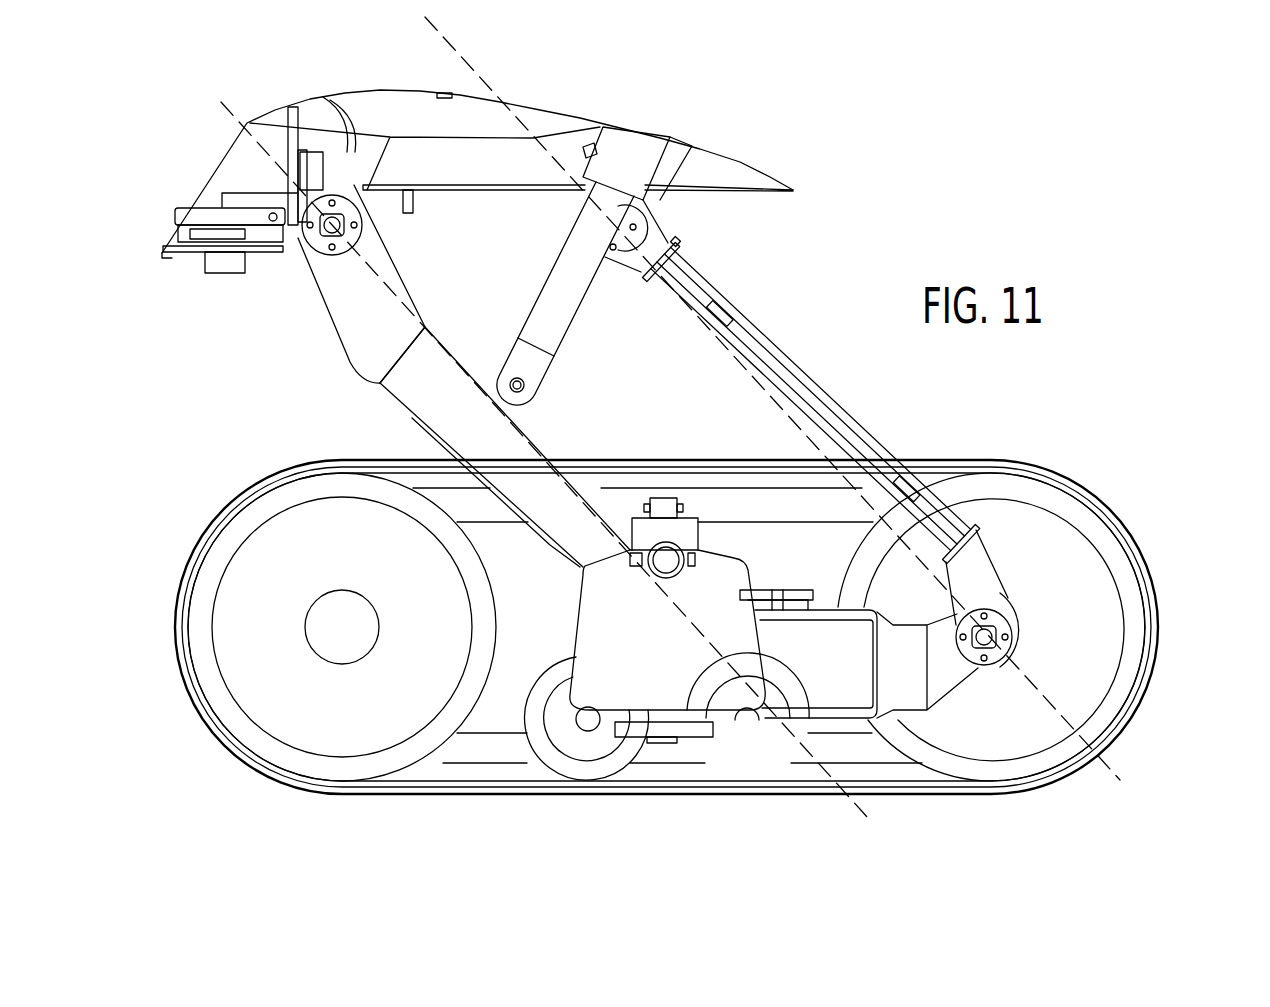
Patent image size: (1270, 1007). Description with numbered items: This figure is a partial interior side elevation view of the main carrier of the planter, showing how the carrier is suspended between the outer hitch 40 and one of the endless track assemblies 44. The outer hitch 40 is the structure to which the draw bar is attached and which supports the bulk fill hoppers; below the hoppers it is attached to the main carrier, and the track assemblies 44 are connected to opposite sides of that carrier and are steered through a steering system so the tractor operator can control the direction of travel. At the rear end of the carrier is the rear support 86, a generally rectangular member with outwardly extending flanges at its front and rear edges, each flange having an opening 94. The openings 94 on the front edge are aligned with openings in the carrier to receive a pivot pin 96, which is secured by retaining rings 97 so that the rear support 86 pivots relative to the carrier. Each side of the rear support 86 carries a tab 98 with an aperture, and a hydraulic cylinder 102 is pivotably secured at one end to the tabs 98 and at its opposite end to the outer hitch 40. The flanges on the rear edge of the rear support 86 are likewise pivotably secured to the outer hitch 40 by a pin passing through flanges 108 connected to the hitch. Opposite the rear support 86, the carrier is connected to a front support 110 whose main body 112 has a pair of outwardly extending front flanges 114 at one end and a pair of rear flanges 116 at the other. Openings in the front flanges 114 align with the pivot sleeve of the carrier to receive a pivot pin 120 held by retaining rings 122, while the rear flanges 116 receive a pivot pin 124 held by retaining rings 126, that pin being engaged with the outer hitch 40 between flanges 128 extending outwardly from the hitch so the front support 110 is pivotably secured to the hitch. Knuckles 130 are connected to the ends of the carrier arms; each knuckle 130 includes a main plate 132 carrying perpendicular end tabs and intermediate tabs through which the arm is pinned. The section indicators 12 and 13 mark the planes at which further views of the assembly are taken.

The section line 12- 12 is at (1082, 812).
The section line 13- 13 is at (833, 848).
The outer hitch 40 is at (536, 100).
The endless track assemblies 44 is at (1108, 478).
The rear support 86 is at (570, 440).
The opening 94 is at (335, 332).
The pivot pin 96 is at (318, 232).
The retaining rings 97 is at (350, 233).
The tab 98 is at (488, 374).
The hydraulic cylinder 102 is at (556, 263).
The flanges 108 is at (345, 150).
The front support 110 is at (862, 385).
The main body 112 is at (866, 424).
The front flanges 114 is at (977, 562).
The rear flanges 116 is at (629, 262).
The pivot pin 120 is at (987, 637).
The retaining rings 122 is at (997, 622).
The pivot pin 124 is at (656, 238).
The retaining rings 126 is at (635, 213).
The flanges 128 is at (675, 150).
The knuckle 130 is at (577, 648).
The main plate 132 is at (675, 680).